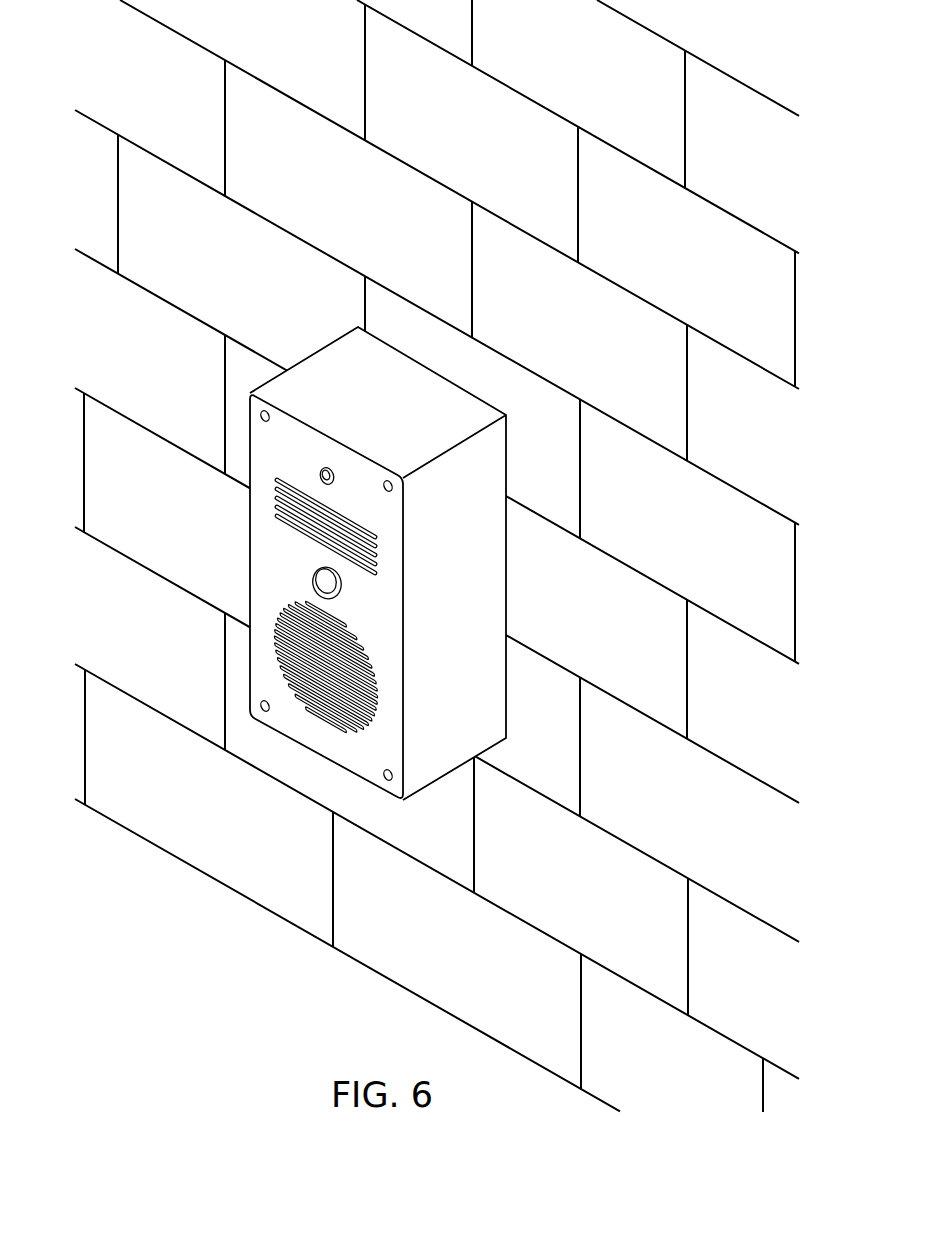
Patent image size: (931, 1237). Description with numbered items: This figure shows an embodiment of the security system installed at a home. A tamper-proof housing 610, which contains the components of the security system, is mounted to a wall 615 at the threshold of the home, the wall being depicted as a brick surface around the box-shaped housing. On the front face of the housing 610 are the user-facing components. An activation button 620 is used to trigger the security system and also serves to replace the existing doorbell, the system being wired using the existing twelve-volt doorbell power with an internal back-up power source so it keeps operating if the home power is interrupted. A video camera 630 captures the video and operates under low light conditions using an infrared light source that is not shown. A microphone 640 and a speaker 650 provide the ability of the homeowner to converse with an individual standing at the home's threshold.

The tamper-proof housing 610 is at (468, 405).
The wall 615 is at (575, 917).
The activation button 620 is at (313, 582).
The video camera 630 is at (327, 467).
The microphone 640 is at (281, 478).
The speaker 650 is at (283, 655).